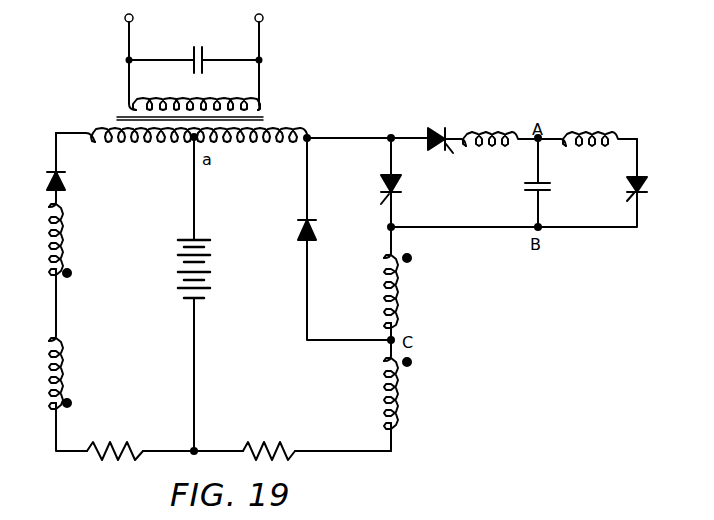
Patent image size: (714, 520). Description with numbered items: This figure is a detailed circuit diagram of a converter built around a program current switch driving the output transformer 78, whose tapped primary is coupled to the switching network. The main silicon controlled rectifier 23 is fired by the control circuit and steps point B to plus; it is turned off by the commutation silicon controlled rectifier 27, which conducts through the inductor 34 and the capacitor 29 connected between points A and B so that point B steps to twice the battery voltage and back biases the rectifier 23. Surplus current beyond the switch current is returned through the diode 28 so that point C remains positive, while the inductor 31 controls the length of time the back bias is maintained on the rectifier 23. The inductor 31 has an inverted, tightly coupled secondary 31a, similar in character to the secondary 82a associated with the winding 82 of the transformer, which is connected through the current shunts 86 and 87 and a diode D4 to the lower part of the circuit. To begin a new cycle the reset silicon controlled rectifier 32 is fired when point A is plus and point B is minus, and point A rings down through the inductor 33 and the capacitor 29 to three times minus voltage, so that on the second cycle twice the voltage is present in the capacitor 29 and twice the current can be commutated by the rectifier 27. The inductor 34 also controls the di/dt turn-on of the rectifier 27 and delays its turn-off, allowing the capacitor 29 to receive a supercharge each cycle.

The output transformer 78 is at (267, 110).
The commutation silicon controlled rectifier 27 is at (438, 125).
The inductor 34 is at (503, 125).
The inductor 33 is at (607, 132).
The capacitor 29 is at (522, 185).
The reset silicon controlled rectifier 32 is at (650, 188).
The silicon controlled rectifier 23 is at (381, 190).
The diode 28 is at (297, 228).
The inductor 31 is at (400, 293).
The inverted tightly coupled secondary 31a is at (65, 239).
The primary tap 82 is at (397, 397).
The inverted tightly coupled secondary 82a is at (65, 375).
The current shunt 87 is at (127, 438).
The current shunt 86 is at (273, 440).
The diode D4 is at (71, 183).